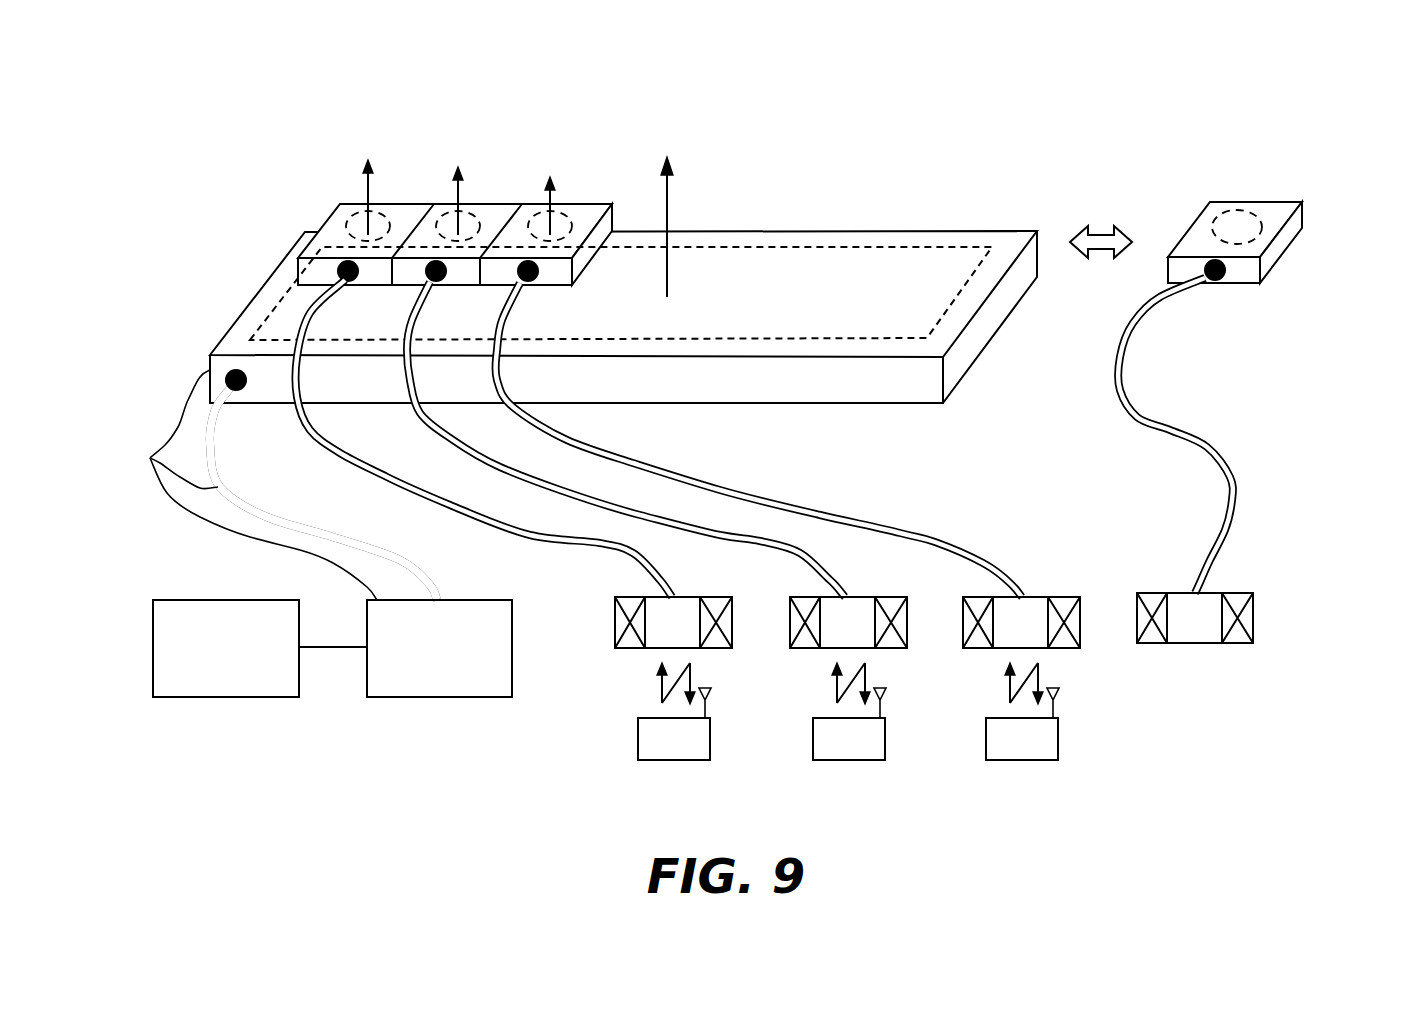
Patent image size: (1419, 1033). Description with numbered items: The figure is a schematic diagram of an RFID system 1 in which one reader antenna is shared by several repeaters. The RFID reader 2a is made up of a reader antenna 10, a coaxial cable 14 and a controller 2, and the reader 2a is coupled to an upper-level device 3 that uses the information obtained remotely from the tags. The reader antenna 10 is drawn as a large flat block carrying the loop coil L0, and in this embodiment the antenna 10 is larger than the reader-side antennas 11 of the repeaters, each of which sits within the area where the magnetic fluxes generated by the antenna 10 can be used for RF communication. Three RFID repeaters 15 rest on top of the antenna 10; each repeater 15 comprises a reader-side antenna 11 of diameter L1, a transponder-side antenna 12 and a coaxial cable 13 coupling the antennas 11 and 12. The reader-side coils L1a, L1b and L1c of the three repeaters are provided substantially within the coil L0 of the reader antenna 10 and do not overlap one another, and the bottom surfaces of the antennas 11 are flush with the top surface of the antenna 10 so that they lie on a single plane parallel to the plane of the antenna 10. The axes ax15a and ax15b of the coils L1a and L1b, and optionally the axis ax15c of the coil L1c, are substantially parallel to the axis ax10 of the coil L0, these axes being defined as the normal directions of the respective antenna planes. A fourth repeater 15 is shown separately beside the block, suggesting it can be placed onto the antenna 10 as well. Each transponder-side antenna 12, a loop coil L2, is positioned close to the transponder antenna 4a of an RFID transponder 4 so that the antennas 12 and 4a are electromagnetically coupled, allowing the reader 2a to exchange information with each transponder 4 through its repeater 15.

The RFID system 1 is at (1028, 501).
The controller 2 is at (485, 600).
The RFID reader 2a is at (244, 484).
The upper-level device 3 is at (252, 600).
The RFID transponder 4 is at (695, 760).
The transponder antenna 4a is at (712, 706).
The reader antenna 10 is at (918, 238).
The reader-side antenna 11 is at (407, 205).
The transponder-side antenna 12 is at (690, 597).
The coaxial cable 13 is at (1213, 443).
The coaxial cable 14 is at (270, 512).
The RFID repeater 15 is at (845, 222).
The coil of the reader antenna L0 is at (810, 237).
The coil of the reader-side antenna L1 is at (1213, 190).
The coil of the first repeater L1a is at (347, 195).
The coil of the second repeater L1b is at (438, 195).
The coil of the third repeater L1c is at (529, 195).
The loop antenna coil L2 is at (712, 648).
The axis of the reader antenna coil ax10 is at (679, 209).
The axis of the first repeater coil ax15a is at (381, 186).
The axis of the second repeater coil ax15b is at (471, 188).
The axis of the third repeater coil ax15c is at (562, 193).